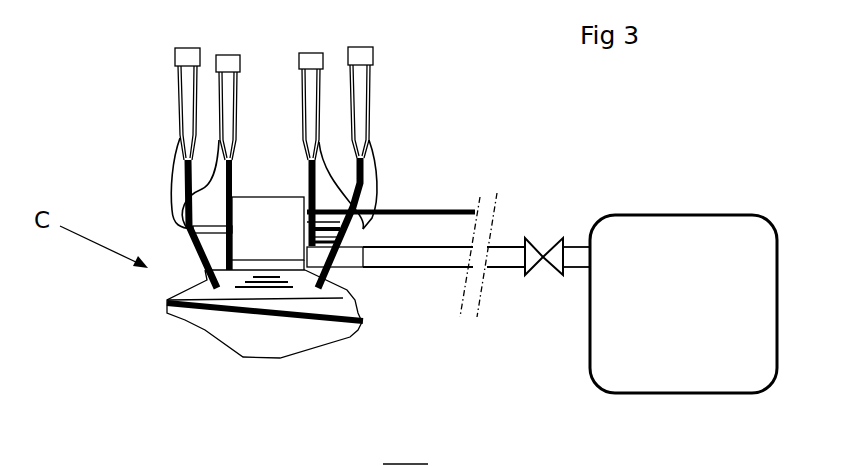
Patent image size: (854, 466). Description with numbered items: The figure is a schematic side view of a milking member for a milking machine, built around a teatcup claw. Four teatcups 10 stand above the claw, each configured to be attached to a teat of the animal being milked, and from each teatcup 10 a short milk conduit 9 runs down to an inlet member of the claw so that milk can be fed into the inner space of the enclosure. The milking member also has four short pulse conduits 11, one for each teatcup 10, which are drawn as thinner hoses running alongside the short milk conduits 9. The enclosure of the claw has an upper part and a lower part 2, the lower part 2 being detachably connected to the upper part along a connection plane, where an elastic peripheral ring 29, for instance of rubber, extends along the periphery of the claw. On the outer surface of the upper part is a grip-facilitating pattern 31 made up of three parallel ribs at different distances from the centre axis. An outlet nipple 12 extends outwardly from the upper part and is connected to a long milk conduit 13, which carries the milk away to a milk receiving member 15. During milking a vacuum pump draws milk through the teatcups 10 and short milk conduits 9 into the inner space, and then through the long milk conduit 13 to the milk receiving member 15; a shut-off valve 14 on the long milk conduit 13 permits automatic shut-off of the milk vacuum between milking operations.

The lower part 2 is at (255, 332).
The short milk conduit 9 is at (233, 185).
The teatcup 10 is at (190, 97).
The short pulse conduit 11 is at (203, 187).
The outlet nipple 12 is at (353, 255).
The long milk conduit 13 is at (503, 255).
The shut-off valve 14 is at (538, 250).
The milk receiving member 15 is at (668, 238).
The peripheral ring 29 is at (315, 327).
The grip-facilitating pattern 31 is at (240, 292).